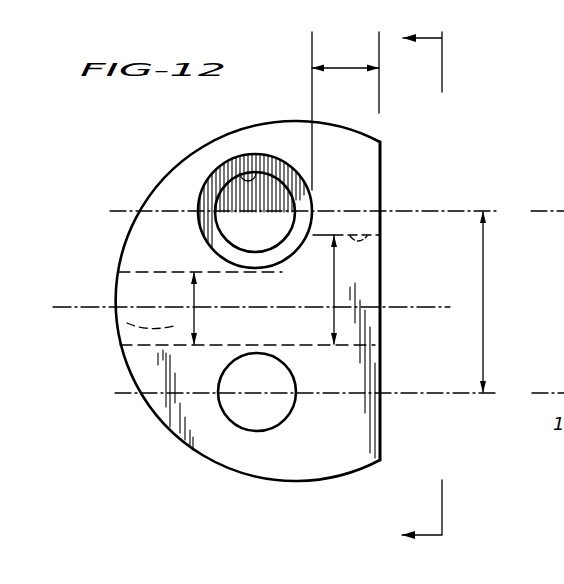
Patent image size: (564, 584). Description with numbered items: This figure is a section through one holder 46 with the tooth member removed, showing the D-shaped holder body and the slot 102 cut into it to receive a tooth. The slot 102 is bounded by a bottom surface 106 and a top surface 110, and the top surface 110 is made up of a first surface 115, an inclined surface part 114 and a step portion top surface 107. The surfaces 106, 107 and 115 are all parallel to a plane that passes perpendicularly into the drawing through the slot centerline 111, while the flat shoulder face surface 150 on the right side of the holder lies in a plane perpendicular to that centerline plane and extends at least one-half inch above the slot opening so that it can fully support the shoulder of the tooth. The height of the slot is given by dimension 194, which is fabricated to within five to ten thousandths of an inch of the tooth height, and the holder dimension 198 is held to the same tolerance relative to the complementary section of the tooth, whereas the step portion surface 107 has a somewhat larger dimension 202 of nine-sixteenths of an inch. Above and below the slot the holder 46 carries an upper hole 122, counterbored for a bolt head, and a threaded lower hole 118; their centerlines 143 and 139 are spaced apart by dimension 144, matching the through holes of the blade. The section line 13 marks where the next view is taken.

The holder 46 is at (160, 167).
The shoulder face surface 150 is at (382, 164).
The upper hole 122 is at (257, 172).
The lower hole 118 is at (286, 417).
The centerline of upper hole 143 is at (419, 210).
The centerline of lower hole 139 is at (408, 396).
The slot 102 is at (130, 325).
The slot centerline 111 is at (63, 303).
The top surface 110 is at (152, 274).
The bottom surface 106 is at (135, 343).
The step portion top surface 107 is at (383, 237).
The first surface 115 is at (264, 273).
The inclined surface part 114 is at (312, 240).
The holder dimension 198 is at (336, 272).
The slot height dimension 194 is at (194, 284).
The hole spacing dimension 144 is at (485, 300).
The step portion dimension 202 is at (343, 67).
The section line 13- 13 is at (438, 288).